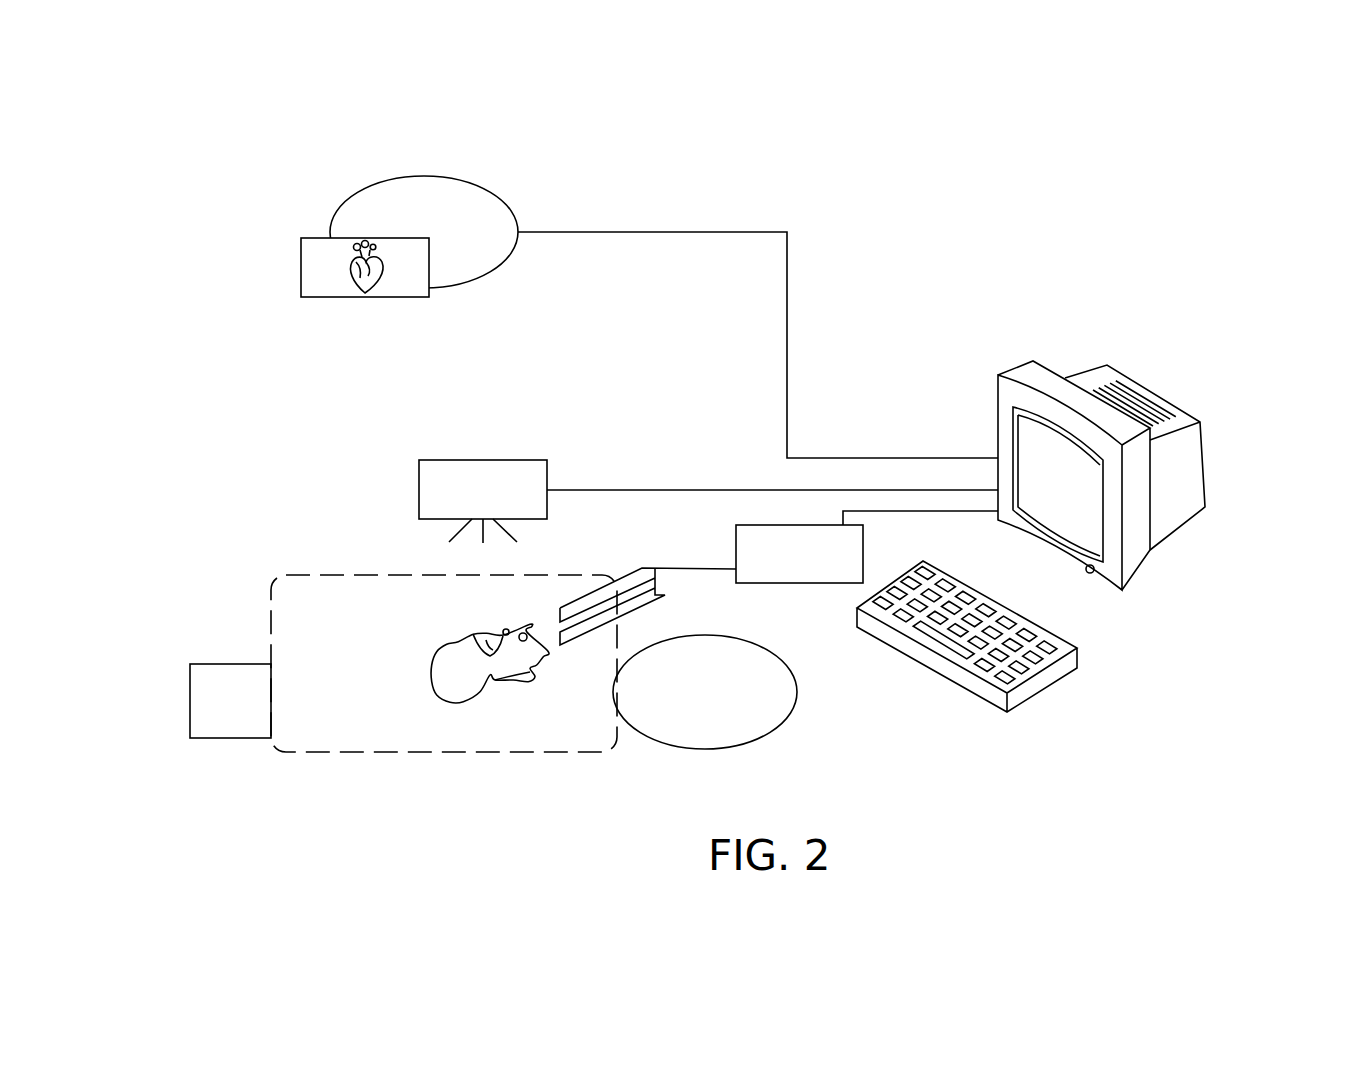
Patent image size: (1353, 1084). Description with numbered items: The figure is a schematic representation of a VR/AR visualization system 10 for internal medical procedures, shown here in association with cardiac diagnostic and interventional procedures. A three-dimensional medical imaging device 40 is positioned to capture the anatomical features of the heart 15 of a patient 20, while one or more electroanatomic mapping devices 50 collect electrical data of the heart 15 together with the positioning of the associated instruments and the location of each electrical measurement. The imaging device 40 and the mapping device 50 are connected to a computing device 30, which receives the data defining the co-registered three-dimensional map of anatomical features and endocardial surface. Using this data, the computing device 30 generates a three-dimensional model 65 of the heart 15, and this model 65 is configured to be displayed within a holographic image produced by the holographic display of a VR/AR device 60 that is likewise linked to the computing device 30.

The VR/AR visualization system 10 is at (950, 281).
The heart 15 is at (430, 634).
The patient 20 is at (361, 712).
The computing device 30 is at (1203, 537).
The 3D medical imaging device 40 is at (499, 502).
The electroanatomic mapping device 50 is at (737, 613).
The VR/AR device 60 is at (477, 238).
The 3D model 65 is at (288, 283).